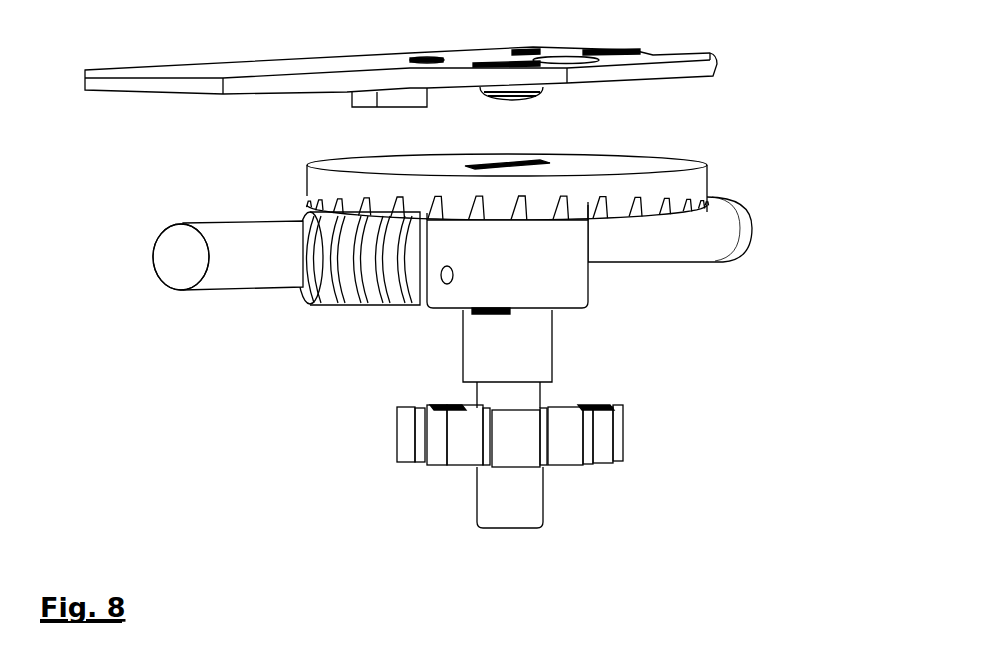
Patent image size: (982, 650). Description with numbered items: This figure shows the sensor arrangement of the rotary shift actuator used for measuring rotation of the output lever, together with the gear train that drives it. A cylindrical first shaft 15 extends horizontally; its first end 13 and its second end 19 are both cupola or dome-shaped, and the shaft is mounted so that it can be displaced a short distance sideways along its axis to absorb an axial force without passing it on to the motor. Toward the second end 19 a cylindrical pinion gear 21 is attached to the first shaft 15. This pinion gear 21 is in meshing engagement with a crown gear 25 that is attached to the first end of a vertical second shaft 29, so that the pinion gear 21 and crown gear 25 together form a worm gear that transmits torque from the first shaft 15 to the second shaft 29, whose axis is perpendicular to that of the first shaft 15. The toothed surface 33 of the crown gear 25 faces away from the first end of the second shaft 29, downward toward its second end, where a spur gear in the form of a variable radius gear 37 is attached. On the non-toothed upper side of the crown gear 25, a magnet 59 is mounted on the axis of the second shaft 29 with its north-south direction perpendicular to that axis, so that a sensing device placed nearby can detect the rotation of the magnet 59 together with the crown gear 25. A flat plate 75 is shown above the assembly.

The first end 13 is at (743, 240).
The first shaft 15 is at (158, 315).
The second end 19 is at (185, 252).
The cylindrical pinion gear 21 is at (343, 293).
The crown gear 25 is at (564, 233).
The second shaft 29 is at (500, 500).
The toothed surface 33 is at (670, 202).
The variable radius gear 37 is at (587, 455).
The magnet 59 is at (548, 147).
The cover plate 75 is at (727, 1).